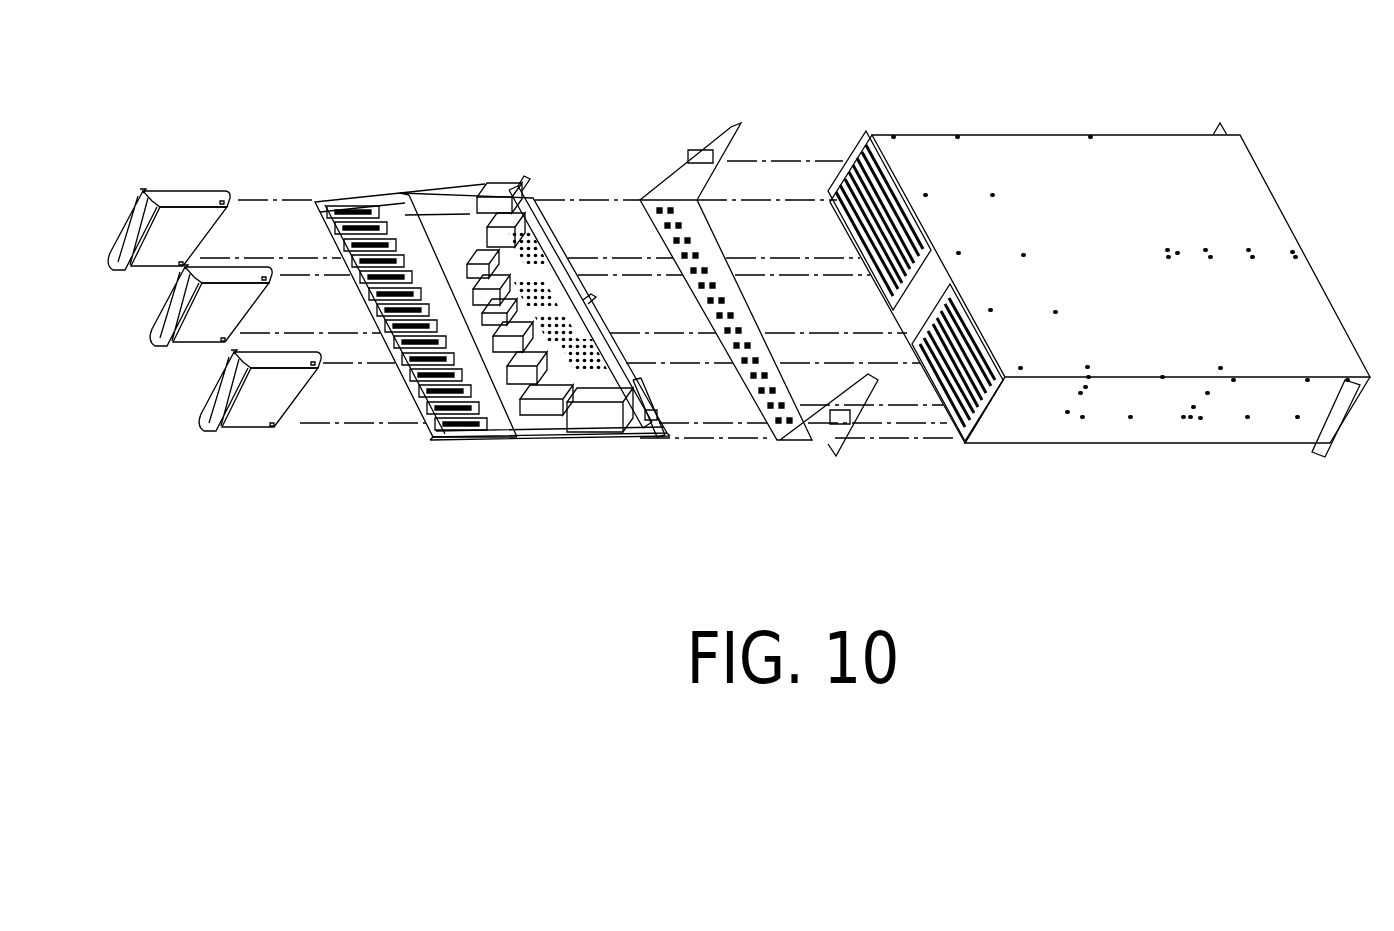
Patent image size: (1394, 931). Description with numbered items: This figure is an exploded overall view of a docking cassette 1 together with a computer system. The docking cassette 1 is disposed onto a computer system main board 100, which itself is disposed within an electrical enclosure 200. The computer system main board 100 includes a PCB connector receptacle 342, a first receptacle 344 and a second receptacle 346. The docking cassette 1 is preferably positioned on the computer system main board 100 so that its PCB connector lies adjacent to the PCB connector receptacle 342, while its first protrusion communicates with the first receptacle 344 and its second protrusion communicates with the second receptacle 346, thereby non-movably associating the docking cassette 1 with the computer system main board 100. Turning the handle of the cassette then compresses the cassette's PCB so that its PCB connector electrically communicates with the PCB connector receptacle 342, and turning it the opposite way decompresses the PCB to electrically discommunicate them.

The docking cassette 1 is at (178, 191).
The computer system main board 100 is at (565, 436).
The electrical enclosure 200 is at (1140, 447).
The PCB connector receptacle 342 is at (478, 438).
The first receptacle 344 is at (407, 197).
The second receptacle 346 is at (330, 198).